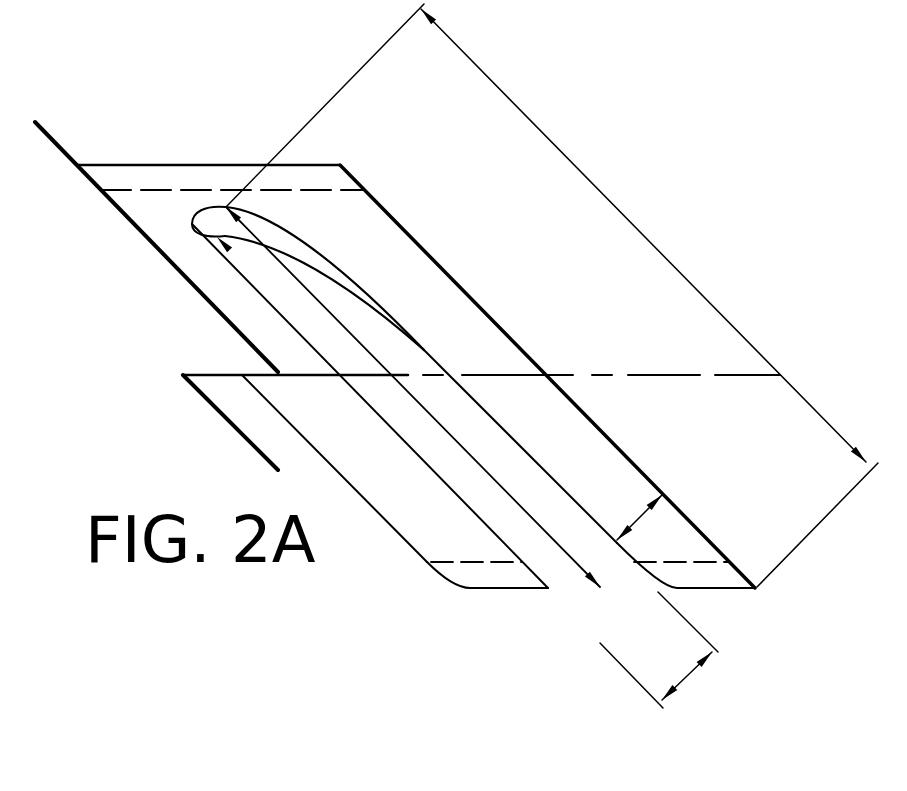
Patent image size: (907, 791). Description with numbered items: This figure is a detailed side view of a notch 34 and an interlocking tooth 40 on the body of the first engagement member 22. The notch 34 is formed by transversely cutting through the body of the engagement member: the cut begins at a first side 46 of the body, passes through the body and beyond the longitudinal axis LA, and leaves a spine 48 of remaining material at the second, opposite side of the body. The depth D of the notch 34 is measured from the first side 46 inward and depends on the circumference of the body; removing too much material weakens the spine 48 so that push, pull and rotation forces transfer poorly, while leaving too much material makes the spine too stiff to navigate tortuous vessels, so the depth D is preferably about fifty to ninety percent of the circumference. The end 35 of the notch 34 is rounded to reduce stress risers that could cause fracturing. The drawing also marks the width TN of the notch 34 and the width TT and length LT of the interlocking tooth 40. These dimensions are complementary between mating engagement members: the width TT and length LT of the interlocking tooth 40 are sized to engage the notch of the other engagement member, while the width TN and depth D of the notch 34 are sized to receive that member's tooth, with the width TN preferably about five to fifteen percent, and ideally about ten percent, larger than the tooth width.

The first engagement member 22 is at (906, 42).
The notch 34 is at (193, 218).
The end of the notch 35 is at (226, 207).
The interlocking tooth 40 is at (357, 227).
The first side of the body 46 is at (728, 590).
The spine 48 is at (198, 165).
The depth of the notch D is at (337, 318).
The length of the interlocking tooth LT is at (647, 240).
The longitudinal axis LA is at (748, 375).
The width of the interlocking tooth TT is at (678, 537).
The width of the notch TN is at (687, 675).